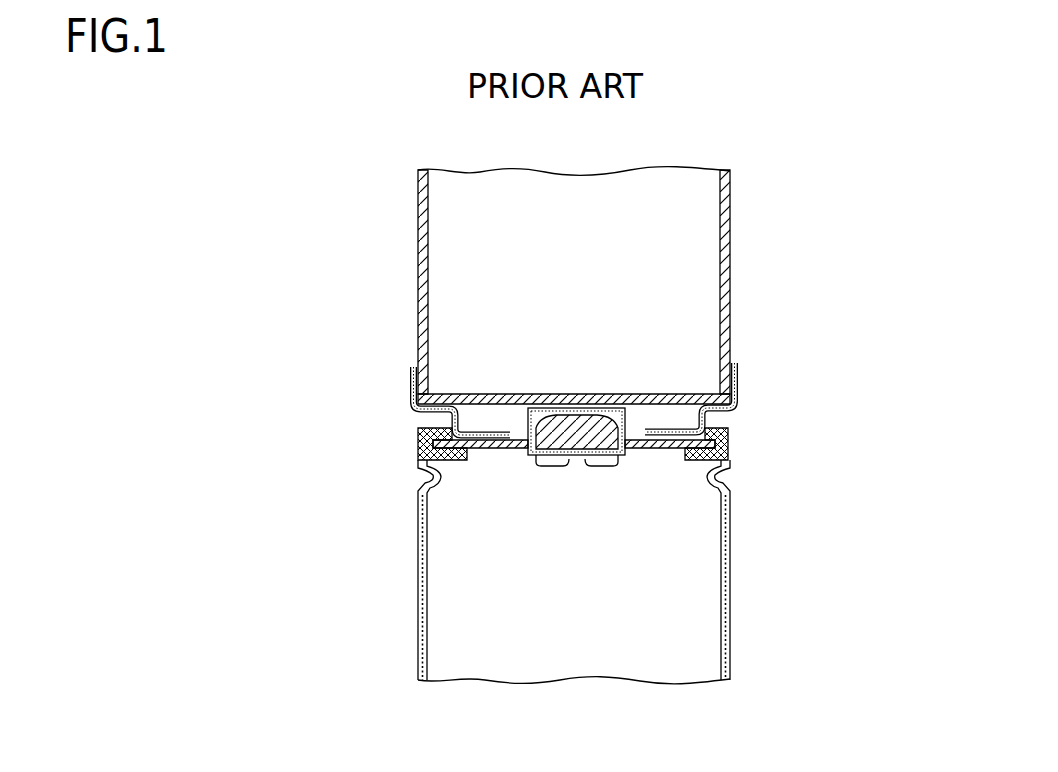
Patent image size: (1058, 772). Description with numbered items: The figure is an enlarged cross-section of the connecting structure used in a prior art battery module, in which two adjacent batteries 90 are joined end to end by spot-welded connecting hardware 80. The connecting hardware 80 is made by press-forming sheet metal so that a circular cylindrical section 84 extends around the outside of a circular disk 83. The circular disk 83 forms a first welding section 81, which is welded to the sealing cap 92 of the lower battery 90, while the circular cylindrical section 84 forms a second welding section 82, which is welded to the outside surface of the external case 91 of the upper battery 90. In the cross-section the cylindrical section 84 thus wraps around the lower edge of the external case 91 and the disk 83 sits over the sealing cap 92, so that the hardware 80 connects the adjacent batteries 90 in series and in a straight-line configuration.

The connecting hardware 80 is at (603, 368).
The first welding section 81 is at (573, 368).
The second welding section 82 is at (603, 380).
The circular disk 83 is at (490, 431).
The circular cylindrical section 84 is at (410, 380).
The battery 90 is at (628, 410).
The external case 91 is at (730, 279).
The sealing cap 92 is at (657, 450).